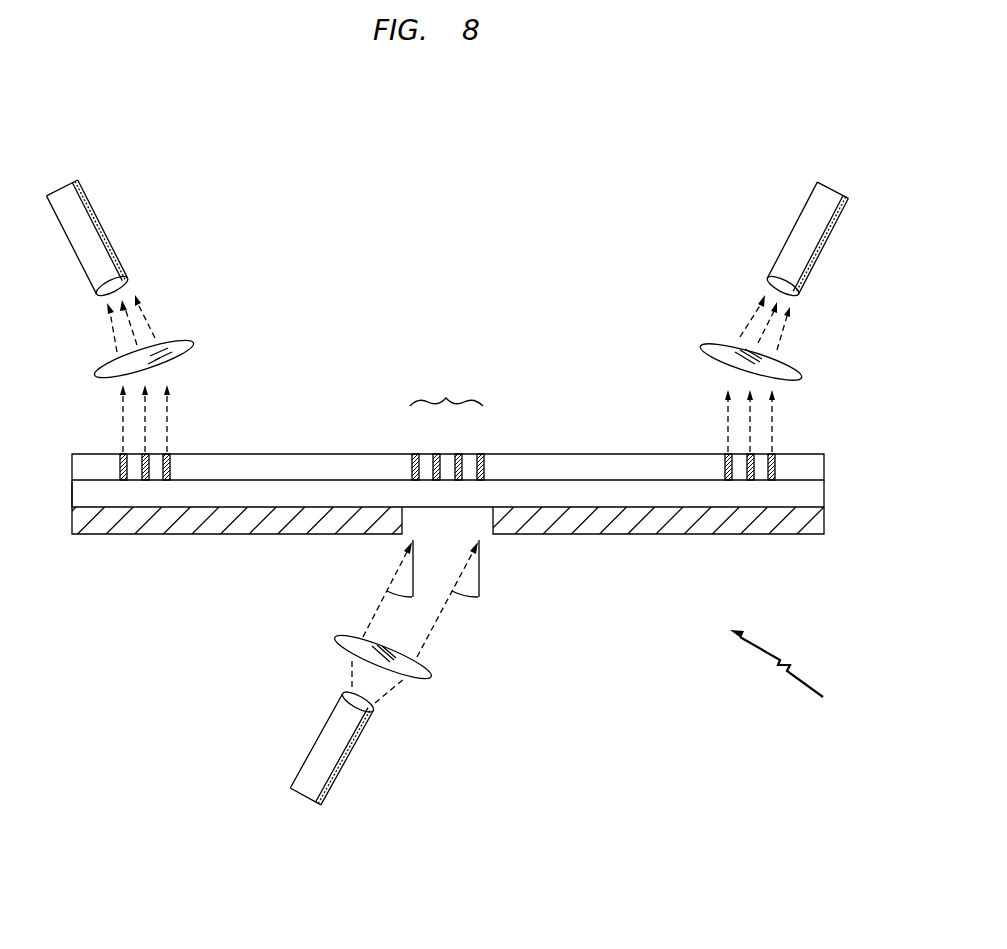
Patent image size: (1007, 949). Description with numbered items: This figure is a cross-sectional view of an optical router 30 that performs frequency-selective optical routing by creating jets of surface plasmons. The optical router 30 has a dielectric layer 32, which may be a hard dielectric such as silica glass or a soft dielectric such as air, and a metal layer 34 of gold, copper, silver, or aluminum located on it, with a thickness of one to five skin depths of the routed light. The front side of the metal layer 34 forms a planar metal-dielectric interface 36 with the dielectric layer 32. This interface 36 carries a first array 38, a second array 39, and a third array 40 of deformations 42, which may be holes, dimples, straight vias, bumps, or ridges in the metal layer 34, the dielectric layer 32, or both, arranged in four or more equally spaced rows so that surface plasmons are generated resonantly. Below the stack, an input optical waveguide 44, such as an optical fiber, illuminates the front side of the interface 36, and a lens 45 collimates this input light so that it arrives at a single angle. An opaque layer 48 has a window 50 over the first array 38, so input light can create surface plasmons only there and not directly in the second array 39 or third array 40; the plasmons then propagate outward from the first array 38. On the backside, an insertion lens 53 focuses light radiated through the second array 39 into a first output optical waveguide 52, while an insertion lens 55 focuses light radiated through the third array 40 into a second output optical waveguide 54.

The optical router 30 is at (791, 672).
The dielectric layer 32 is at (825, 492).
The metal layer 34 is at (825, 466).
The metal-dielectric interface 36 is at (72, 482).
The first array of deformations 38 is at (446, 387).
The second array of deformations 39 is at (175, 443).
The third array of deformations 40 is at (782, 445).
The deformations 42 is at (120, 453).
The input optical waveguide 44 is at (345, 763).
The lens 45 is at (335, 643).
The opaque layer 48 is at (72, 531).
The window 50 is at (477, 530).
The first output optical waveguide 52 is at (102, 223).
The insertion lens 53 is at (185, 343).
The second output optical waveguide 54 is at (795, 228).
The insertion lens 55 is at (797, 367).